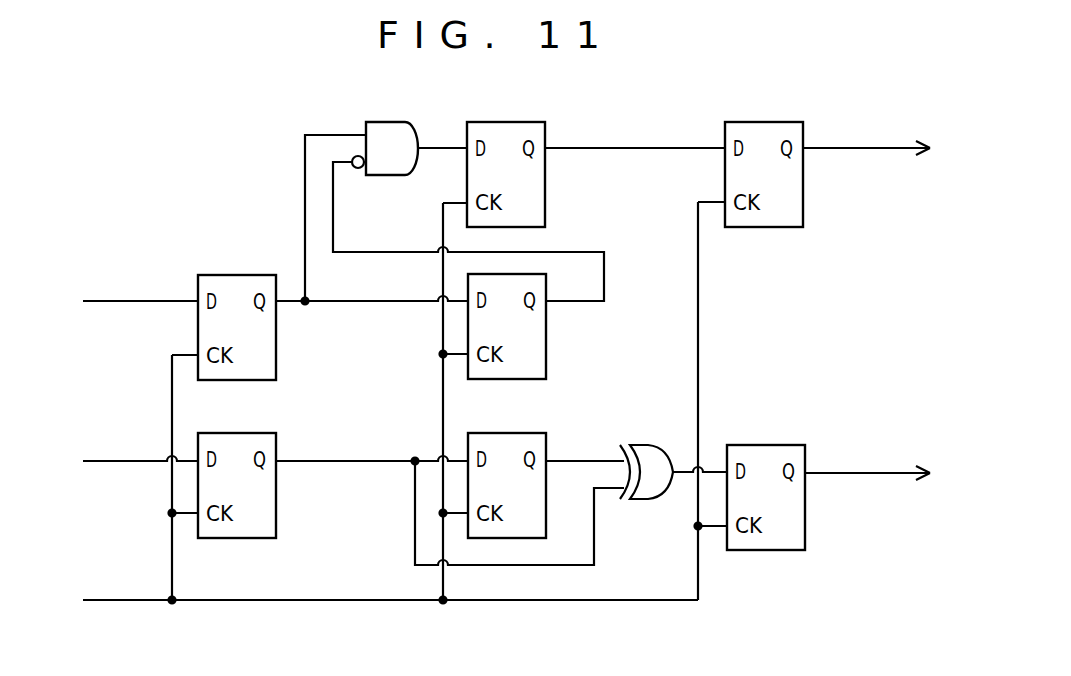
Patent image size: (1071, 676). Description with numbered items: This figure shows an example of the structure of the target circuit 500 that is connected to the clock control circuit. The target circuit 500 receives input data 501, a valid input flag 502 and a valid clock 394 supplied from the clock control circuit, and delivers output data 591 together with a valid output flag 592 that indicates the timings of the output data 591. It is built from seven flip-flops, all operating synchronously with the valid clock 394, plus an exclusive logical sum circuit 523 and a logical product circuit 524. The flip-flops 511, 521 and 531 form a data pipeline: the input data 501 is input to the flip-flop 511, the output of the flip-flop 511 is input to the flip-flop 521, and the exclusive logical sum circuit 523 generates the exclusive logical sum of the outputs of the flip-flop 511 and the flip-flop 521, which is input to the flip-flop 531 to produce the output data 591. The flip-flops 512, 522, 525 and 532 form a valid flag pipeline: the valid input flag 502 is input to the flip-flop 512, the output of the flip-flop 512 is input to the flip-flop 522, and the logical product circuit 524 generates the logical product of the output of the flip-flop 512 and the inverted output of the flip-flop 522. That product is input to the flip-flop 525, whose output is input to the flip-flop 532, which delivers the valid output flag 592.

The target circuit 500 is at (190, 185).
The input data 501 is at (102, 465).
The valid input flag 502 is at (102, 304).
The valid clock 394 is at (102, 601).
The flip-flop 511 is at (243, 433).
The flip-flop 512 is at (243, 275).
The flip-flop 521 is at (512, 433).
The flip-flop 522 is at (546, 354).
The exclusive logical sum circuit 523 is at (641, 447).
The logical product circuit 524 is at (385, 122).
The flip-flop 525 is at (512, 122).
The flip-flop 531 is at (770, 445).
The flip-flop 532 is at (768, 122).
The output data 591 is at (875, 473).
The valid output flag 592 is at (872, 148).